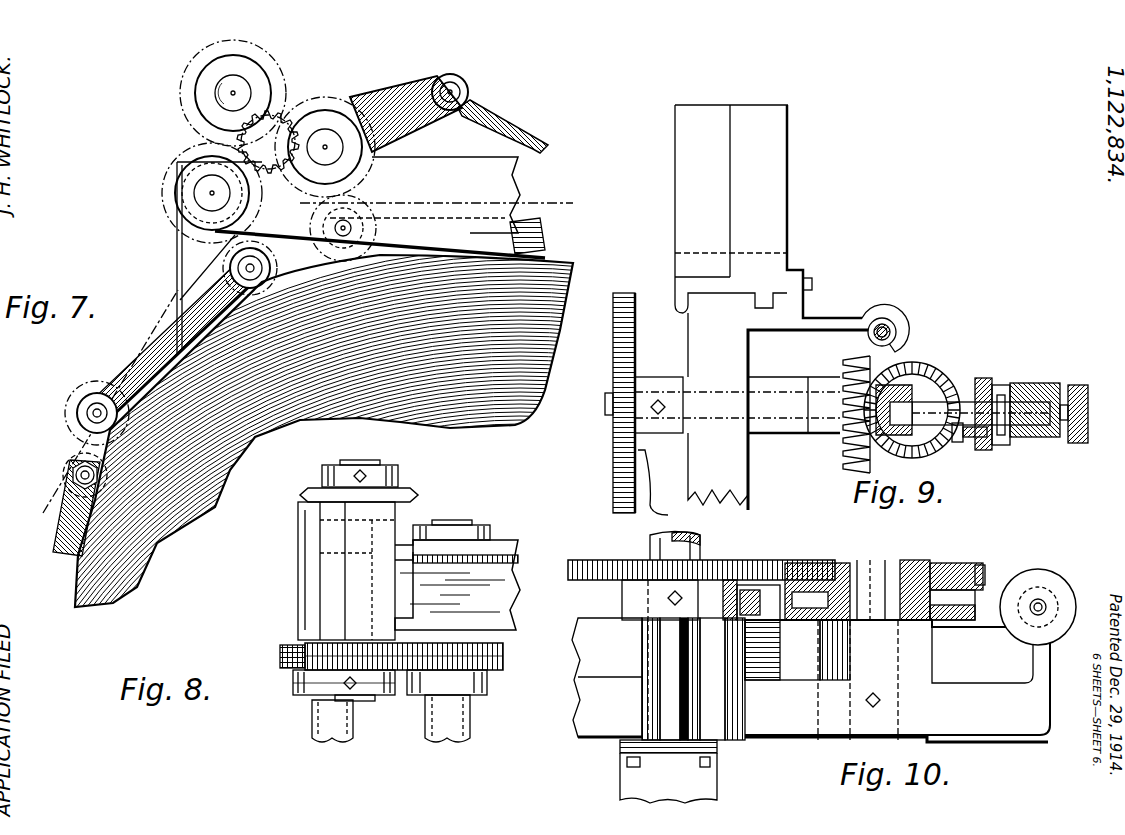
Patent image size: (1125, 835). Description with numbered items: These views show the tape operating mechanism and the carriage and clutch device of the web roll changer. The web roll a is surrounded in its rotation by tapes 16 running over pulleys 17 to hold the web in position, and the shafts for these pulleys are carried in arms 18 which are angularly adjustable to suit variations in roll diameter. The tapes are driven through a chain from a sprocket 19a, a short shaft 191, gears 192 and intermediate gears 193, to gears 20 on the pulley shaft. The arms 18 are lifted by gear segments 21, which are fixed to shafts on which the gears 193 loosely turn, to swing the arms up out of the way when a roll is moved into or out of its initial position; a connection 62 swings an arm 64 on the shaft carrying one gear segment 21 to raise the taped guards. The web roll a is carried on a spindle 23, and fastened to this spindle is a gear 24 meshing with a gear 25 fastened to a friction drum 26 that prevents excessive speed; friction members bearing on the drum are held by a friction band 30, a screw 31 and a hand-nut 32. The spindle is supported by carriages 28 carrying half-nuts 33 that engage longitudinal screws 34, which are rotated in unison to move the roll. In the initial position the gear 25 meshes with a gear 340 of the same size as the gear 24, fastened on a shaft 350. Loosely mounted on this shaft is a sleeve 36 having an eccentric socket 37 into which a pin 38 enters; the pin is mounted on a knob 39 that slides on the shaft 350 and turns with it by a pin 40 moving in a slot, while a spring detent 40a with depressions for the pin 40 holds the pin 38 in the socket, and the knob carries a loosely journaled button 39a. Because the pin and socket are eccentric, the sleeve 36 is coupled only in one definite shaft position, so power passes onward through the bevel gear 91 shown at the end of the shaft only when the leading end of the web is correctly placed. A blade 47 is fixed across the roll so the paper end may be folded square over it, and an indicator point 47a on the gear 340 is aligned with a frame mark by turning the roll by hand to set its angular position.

In FIG. 7, the tapes 16 is at (562, 206).
In FIG. 7, the pulleys 17 is at (72, 413).
In FIG. 7, the arms 18 is at (537, 242).
In FIG. 8, the sprocket 19a is at (396, 492).
In FIG. 7, the gears 20 is at (299, 245).
In FIG. 7, the gear segments 21 is at (192, 141).
In FIG. 8, the gear segments 21 is at (412, 548).
In FIG. 10, the spindle 23 is at (692, 550).
In FIG. 10, the gear 24 is at (590, 561).
In FIG. 10, the gear 25 is at (806, 563).
In FIG. 10, the friction drum 26 is at (798, 620).
In FIG. 9, the carriage 28 is at (773, 167).
In FIG. 10, the carriage 28 is at (598, 708).
In FIG. 10, the friction band 30 is at (742, 590).
In FIG. 10, the screw 31 is at (1042, 602).
In FIG. 10, the hand-nut 32 is at (1018, 571).
In FIG. 9, the half-nuts 33 is at (885, 310).
In FIG. 10, the half-nuts 33 is at (632, 776).
In FIG. 9, the longitudinal screws 34 is at (886, 330).
In FIG. 9, the sleeve 36 is at (822, 432).
In FIG. 9, the eccentric socket 37 is at (958, 443).
In FIG. 10, the eccentric socket 37 is at (720, 742).
In FIG. 9, the pin 38 is at (978, 440).
In FIG. 9, the knob 39 is at (1040, 432).
In FIG. 9, the button 39a is at (1077, 385).
In FIG. 9, the pin 40 is at (1003, 400).
In FIG. 9, the spring detent 40a is at (1000, 383).
In FIG. 7, the blade 47 is at (176, 248).
In FIG. 9, the indicator point 47a is at (660, 514).
In FIG. 7, the connection 62 is at (518, 140).
In FIG. 7, the arm 64 is at (407, 90).
In FIG. 8, the arm 64 is at (510, 545).
In FIG. 9, the bevel gear 91 is at (905, 362).
In FIG. 7, the short shaft 191 is at (226, 92).
In FIG. 8, the short shaft 191 is at (368, 452).
In FIG. 7, the gears 192 is at (205, 48).
In FIG. 8, the gears 192 is at (308, 693).
In FIG. 7, the intermediate gears 193 is at (163, 190).
In FIG. 8, the intermediate gears 193 is at (280, 652).
In FIG. 9, the gear 340 is at (632, 283).
In FIG. 9, the shaft 350 is at (609, 415).
In FIG. 7, the web roll a is at (160, 540).